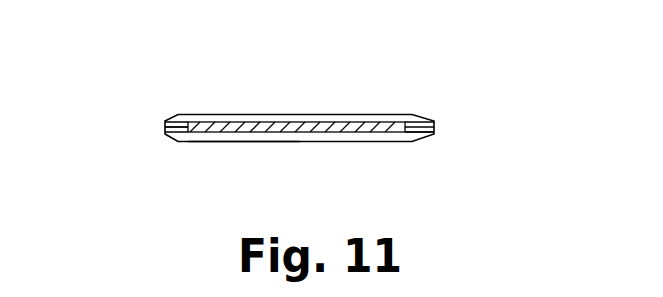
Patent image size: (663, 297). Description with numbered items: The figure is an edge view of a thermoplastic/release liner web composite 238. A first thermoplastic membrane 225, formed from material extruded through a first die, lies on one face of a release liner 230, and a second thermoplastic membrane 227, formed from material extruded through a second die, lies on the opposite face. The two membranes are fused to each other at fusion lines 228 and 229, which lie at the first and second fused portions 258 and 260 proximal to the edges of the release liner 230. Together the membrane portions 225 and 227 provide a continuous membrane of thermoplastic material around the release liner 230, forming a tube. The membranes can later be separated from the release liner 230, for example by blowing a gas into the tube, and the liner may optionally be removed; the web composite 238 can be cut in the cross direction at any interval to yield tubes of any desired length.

The first thermoplastic membrane 225 is at (230, 115).
The second thermoplastic membrane 227 is at (207, 133).
The fusion line 228 is at (180, 131).
The fusion line 229 is at (413, 134).
The release liner 230 is at (337, 126).
The thermoplastic/release liner web composite 238 is at (397, 96).
The first fused portion 258 is at (165, 114).
The second fused portion 260 is at (428, 115).